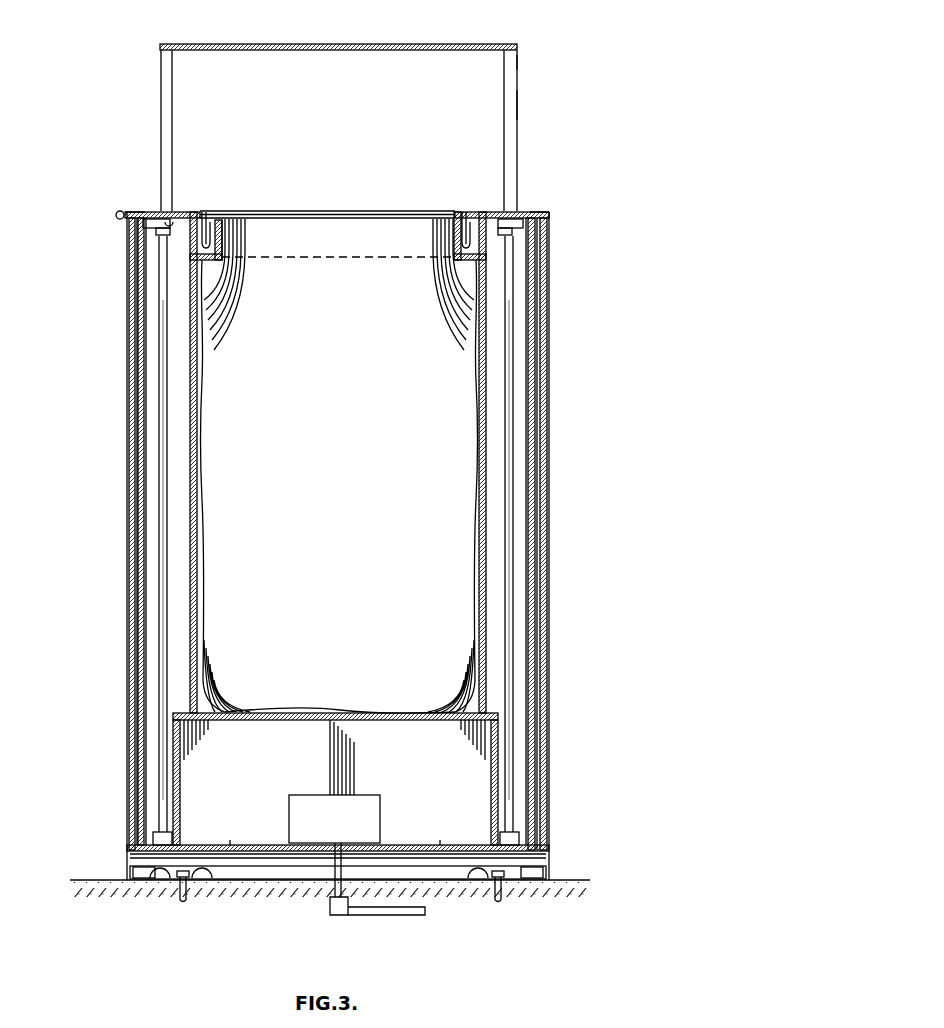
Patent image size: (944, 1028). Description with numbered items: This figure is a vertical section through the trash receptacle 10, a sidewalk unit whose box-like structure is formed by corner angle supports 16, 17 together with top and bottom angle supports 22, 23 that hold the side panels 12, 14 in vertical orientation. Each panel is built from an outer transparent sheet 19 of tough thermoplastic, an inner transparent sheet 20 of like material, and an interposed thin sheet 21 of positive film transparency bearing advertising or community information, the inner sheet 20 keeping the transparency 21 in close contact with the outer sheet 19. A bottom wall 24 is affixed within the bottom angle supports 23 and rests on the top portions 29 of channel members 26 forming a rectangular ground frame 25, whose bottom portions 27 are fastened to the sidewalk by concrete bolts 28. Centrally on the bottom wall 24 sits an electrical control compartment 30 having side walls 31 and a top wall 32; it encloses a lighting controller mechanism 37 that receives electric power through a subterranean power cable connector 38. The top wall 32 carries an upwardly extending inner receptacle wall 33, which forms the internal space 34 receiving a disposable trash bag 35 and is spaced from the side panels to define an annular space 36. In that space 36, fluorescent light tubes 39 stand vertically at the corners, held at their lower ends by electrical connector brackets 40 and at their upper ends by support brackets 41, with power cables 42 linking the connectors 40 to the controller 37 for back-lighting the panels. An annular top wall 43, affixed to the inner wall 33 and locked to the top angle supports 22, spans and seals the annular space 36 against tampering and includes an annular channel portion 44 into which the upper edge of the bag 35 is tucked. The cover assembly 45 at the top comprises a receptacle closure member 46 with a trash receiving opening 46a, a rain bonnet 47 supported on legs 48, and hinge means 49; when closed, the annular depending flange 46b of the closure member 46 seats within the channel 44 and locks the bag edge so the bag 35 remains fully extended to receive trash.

The trash receptacle 10 is at (543, 62).
The side panel 12 is at (553, 432).
The side panel 14 is at (127, 412).
The corner angle support 16 is at (549, 312).
The corner angle support 17 is at (129, 294).
The outer transparent sheet 19 is at (140, 346).
The inner transparent sheet 20 is at (163, 512).
The sheet of positive film transparency material 21 is at (148, 546).
The top angle support 22 is at (130, 224).
The bottom angle support 23 is at (150, 856).
The bottom wall 24 is at (262, 846).
The ground frame 25 is at (554, 872).
The channel member 26 is at (150, 866).
The bottom portion 27 is at (185, 879).
The concrete bolt 28 is at (200, 878).
The top portion 29 is at (160, 879).
The electrical control compartment 30 is at (458, 762).
The side wall 31 is at (176, 782).
The top wall 32 is at (388, 722).
The inner receptacle wall 33 is at (190, 582).
The internal space 34 is at (466, 272).
The disposable trash bag 35 is at (338, 371).
The annular space 36 is at (150, 456).
The lighting controller mechanism 37 is at (334, 819).
The subterranean power cable connector 38 is at (375, 916).
The fluorescent light tube 39 is at (150, 636).
The electrical connector bracket 40 is at (158, 838).
The support bracket 41 is at (146, 211).
The power cable 42 is at (228, 840).
The annular top wall 43 is at (190, 212).
The annular channel portion 44 is at (219, 258).
The cover assembly 45 is at (524, 108).
The receptacle closure member 46 is at (186, 211).
The trash receiving opening 46a is at (226, 216).
The annular depending flange 46b is at (212, 236).
The rain bonnet 47 is at (355, 44).
The leg 48 is at (160, 206).
The hinge means 49 is at (116, 214).